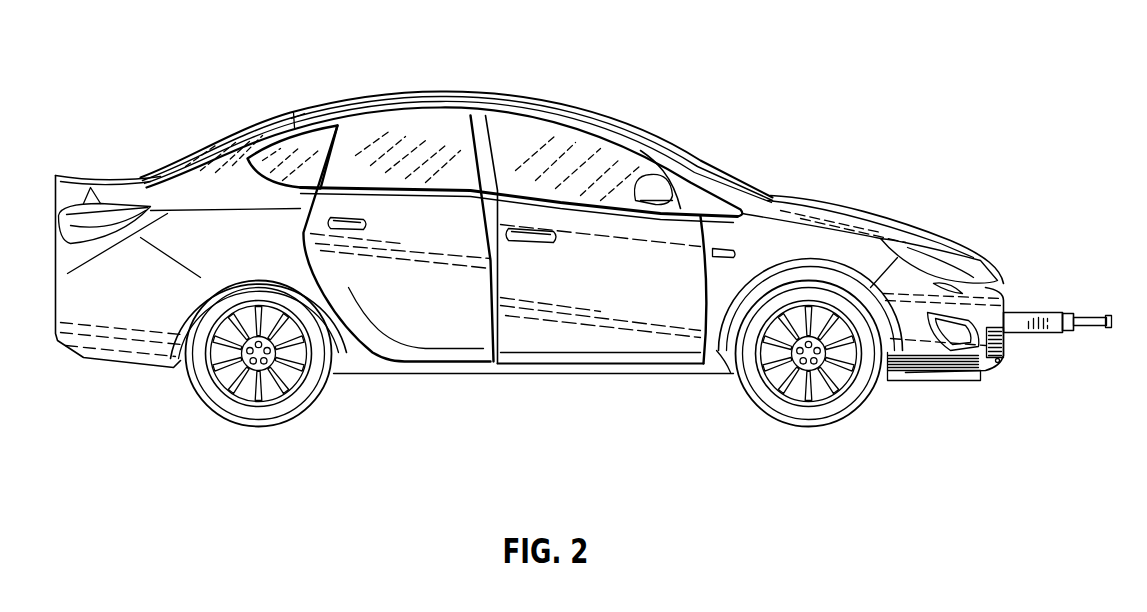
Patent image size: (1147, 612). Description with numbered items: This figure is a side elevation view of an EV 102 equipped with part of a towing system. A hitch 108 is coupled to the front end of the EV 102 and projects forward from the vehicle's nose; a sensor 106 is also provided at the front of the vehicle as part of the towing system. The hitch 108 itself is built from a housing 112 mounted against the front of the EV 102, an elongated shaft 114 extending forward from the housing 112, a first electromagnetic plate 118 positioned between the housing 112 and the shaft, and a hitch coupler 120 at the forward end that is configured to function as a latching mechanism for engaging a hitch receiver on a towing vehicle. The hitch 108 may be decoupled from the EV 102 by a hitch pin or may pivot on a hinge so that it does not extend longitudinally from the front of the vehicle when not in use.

The EV 102 is at (550, 102).
The sensor 106 is at (1000, 363).
The hitch 108 is at (1013, 320).
The housing 112 is at (1047, 333).
The elongated shaft 114 is at (1098, 326).
The first electromagnetic plate 118 is at (1067, 313).
The hitch coupler 120 is at (1104, 315).